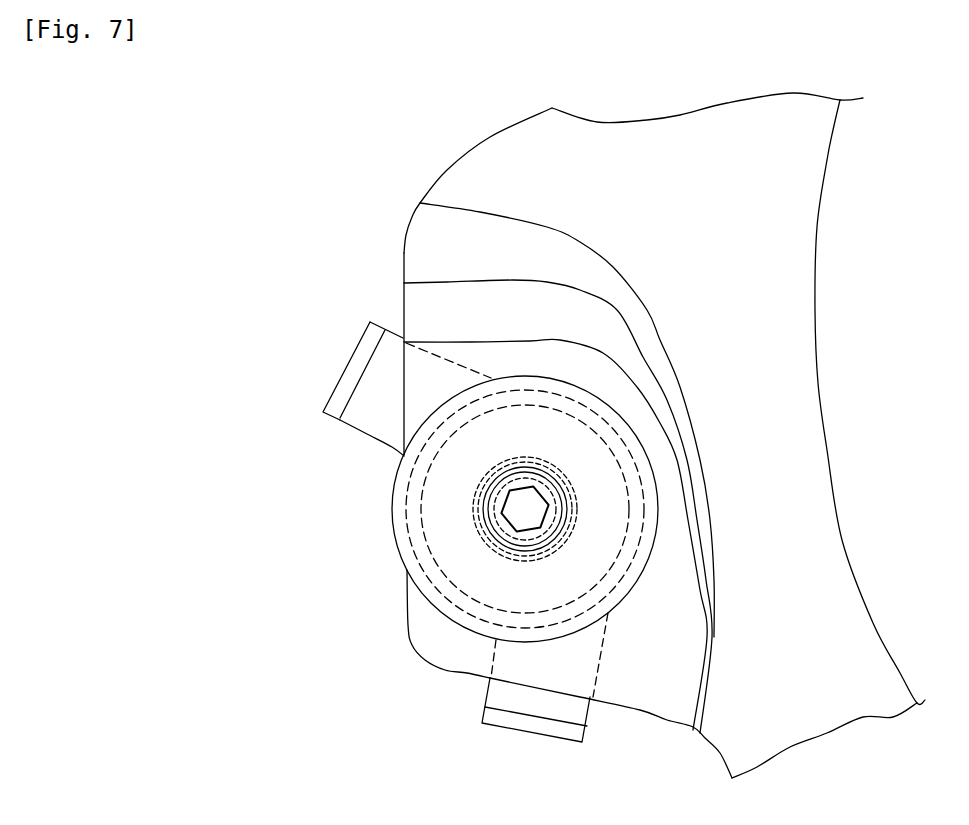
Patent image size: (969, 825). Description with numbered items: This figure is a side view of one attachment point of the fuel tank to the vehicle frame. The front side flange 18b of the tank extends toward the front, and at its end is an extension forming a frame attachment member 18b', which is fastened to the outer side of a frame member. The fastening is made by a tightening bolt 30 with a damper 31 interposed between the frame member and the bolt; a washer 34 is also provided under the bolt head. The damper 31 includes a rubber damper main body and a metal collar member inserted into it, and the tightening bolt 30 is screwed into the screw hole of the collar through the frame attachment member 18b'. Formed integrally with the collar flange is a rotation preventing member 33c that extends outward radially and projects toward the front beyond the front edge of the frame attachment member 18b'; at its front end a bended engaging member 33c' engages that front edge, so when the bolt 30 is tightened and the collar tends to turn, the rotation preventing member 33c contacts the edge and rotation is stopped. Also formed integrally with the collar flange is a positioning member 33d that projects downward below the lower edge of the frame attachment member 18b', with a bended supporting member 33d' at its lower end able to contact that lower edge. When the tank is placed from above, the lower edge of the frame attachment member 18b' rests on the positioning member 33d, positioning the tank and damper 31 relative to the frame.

The front side flange 18b is at (664, 420).
The frame attachment member 18b' is at (391, 624).
The tightening bolt 30 is at (558, 538).
The damper 31 is at (604, 412).
The rotation preventing member 33c is at (349, 419).
The bended engaging member 33c' is at (308, 370).
The positioning member 33d is at (473, 710).
The bended supporting member 33d' is at (561, 751).
The washer 34 is at (641, 570).